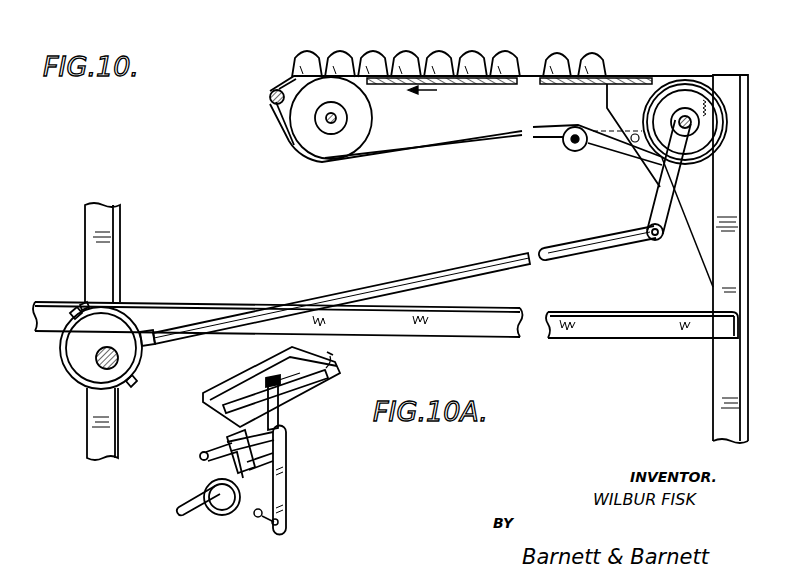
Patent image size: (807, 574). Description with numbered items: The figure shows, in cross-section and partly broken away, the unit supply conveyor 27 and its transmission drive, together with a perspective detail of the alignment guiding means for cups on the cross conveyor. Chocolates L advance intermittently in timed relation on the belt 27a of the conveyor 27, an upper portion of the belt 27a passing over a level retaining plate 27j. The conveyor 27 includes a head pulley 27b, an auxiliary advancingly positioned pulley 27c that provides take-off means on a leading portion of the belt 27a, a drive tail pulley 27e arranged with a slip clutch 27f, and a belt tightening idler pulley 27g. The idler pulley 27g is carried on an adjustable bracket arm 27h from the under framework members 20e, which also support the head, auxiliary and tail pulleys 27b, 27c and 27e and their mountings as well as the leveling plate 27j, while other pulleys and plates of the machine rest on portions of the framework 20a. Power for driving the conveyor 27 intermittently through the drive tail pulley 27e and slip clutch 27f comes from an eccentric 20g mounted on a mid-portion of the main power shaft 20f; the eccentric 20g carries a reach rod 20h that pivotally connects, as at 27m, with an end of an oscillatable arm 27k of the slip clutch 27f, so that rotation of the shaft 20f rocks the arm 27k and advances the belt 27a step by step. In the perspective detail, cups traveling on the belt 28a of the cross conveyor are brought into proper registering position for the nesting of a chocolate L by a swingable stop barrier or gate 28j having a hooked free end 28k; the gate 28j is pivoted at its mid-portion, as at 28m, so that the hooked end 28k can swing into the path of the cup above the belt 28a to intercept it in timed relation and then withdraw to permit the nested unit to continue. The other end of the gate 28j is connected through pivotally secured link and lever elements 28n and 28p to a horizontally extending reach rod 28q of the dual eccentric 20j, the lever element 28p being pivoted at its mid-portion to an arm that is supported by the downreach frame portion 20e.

In FIG. 10, the chocolates L is at (466, 50).
In FIG. 10, the framework 20a is at (113, 241).
In FIG. 10, the under framework members 20e is at (702, 272).
In FIG. 10A, the under framework members 20e is at (221, 441).
In FIG. 10, the main power shaft 20f is at (97, 366).
In FIG. 10A, the main power shaft 20f is at (182, 504).
In FIG. 10, the eccentric 20g is at (113, 327).
In FIG. 10, the reach rod 20h is at (388, 287).
In FIG. 10A, the dual eccentric 20j is at (222, 514).
In FIG. 10, the conveyor 27 is at (531, 82).
In FIG. 10, the belt 27a is at (372, 80).
In FIG. 10, the head pulley 27b is at (340, 150).
In FIG. 10, the auxiliary advancingly positioned pulley 27c is at (270, 106).
In FIG. 10, the drive tail pulley 27e is at (680, 84).
In FIG. 10, the slip clutch 27f is at (692, 163).
In FIG. 10, the belt tightening idler pulley 27g is at (562, 143).
In FIG. 10, the adjustable bracket arm 27h is at (598, 143).
In FIG. 10, the level retaining plate 27j is at (460, 84).
In FIG. 10, the oscillatable arm 27k is at (658, 194).
In FIG. 10, the pivotal connection 27m is at (640, 242).
In FIG. 10A, the belt 28a is at (338, 362).
In FIG. 10A, the swingable stop barrier or gate 28j is at (289, 498).
In FIG. 10A, the hooked free end 28k is at (313, 388).
In FIG. 10A, the pivot 28m is at (278, 418).
In FIG. 10A, the link element 28n is at (227, 431).
In FIG. 10A, the lever element 28p is at (289, 463).
In FIG. 10A, the reach rod 28q is at (263, 527).